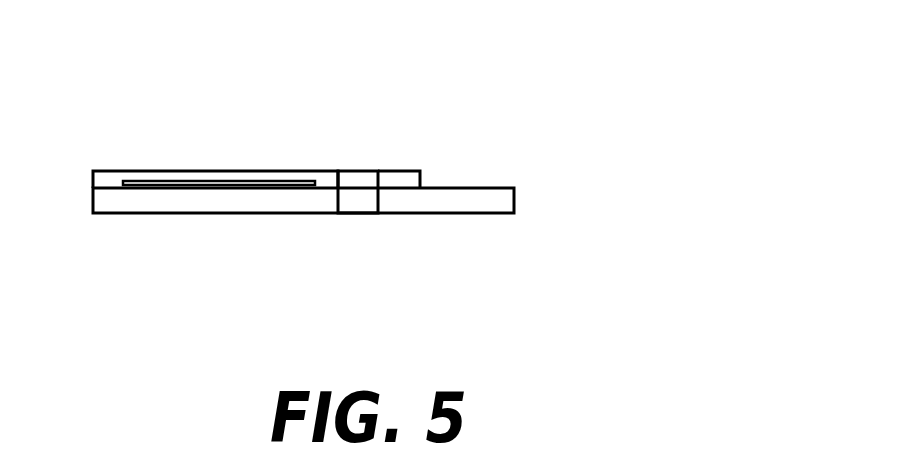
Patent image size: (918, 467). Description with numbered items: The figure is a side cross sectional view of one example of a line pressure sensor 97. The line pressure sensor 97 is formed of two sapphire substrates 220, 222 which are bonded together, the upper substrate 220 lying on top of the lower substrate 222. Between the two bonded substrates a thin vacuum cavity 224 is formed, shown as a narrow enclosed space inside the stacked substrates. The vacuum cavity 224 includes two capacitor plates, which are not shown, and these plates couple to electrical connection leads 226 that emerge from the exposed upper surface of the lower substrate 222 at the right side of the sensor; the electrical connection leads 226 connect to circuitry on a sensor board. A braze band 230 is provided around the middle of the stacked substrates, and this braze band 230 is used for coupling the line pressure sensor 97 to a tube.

The line pressure sensor 97 is at (672, 136).
The sapphire substrate 220 is at (135, 170).
The sapphire substrate 222 is at (135, 215).
The vacuum cavity 224 is at (232, 188).
The electrical connection leads 226 is at (463, 186).
The braze band 230 is at (353, 180).